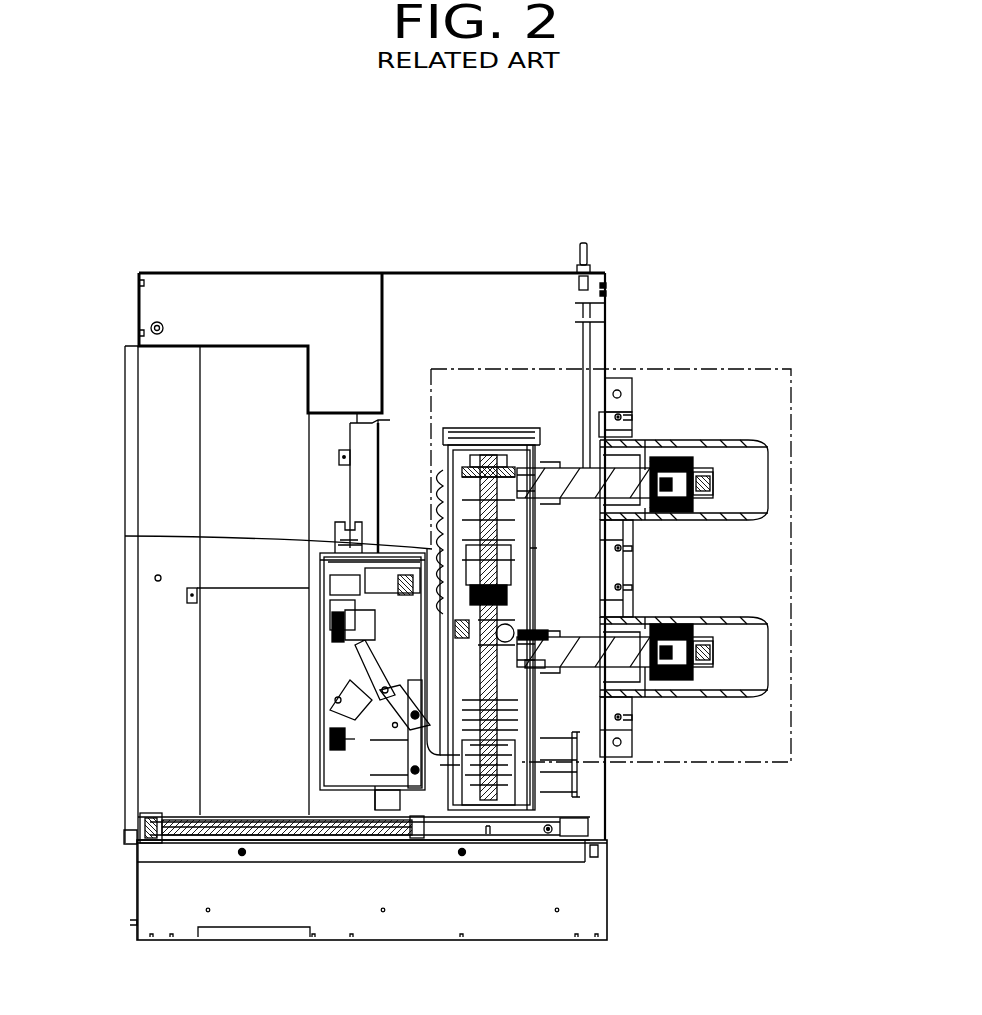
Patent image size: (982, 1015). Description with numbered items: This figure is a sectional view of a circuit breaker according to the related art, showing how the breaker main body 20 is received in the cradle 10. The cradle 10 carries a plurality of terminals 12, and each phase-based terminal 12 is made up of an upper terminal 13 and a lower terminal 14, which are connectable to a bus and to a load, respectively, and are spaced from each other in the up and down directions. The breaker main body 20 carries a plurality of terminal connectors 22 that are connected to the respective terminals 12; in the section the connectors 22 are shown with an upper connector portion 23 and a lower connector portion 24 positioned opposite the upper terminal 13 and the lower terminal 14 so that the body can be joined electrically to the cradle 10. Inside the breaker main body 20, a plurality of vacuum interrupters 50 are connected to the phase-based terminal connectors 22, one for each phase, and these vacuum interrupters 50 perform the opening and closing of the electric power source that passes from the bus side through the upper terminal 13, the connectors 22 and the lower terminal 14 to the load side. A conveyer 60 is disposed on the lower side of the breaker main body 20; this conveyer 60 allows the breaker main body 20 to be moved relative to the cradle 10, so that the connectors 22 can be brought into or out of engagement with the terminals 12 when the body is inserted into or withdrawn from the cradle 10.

The vacuum circuit breaker 10 is at (617, 266).
The main circuit terminal part 12 is at (847, 460).
The upper terminal 13 is at (713, 483).
The lower terminal 14 is at (713, 653).
The breaker main body 20 is at (121, 726).
The vacuum interrupter 22 is at (743, 322).
The fixed contact rod 23 is at (583, 487).
The movable contact rod 24 is at (590, 647).
The operating mechanism 50 is at (340, 543).
The transfer rail 60 is at (191, 845).